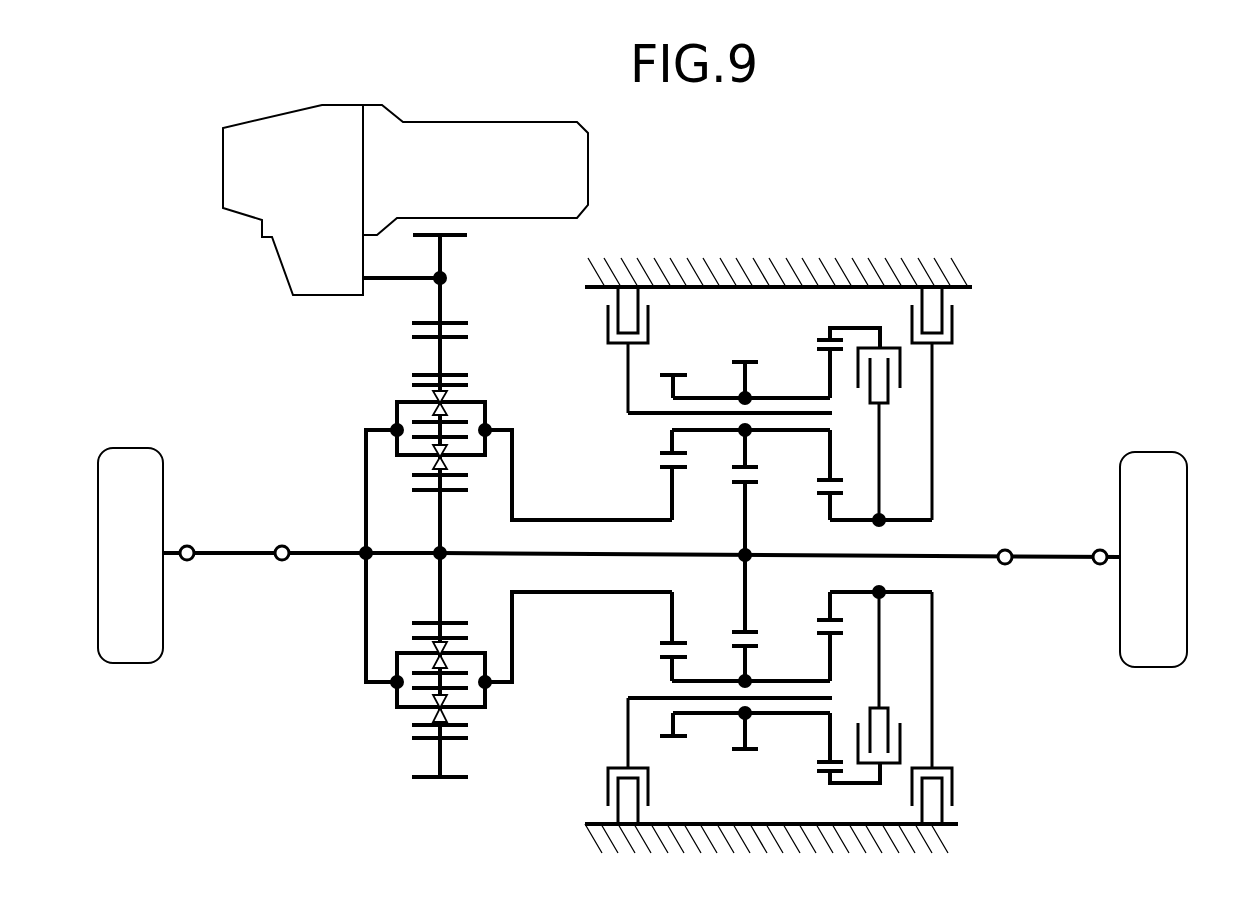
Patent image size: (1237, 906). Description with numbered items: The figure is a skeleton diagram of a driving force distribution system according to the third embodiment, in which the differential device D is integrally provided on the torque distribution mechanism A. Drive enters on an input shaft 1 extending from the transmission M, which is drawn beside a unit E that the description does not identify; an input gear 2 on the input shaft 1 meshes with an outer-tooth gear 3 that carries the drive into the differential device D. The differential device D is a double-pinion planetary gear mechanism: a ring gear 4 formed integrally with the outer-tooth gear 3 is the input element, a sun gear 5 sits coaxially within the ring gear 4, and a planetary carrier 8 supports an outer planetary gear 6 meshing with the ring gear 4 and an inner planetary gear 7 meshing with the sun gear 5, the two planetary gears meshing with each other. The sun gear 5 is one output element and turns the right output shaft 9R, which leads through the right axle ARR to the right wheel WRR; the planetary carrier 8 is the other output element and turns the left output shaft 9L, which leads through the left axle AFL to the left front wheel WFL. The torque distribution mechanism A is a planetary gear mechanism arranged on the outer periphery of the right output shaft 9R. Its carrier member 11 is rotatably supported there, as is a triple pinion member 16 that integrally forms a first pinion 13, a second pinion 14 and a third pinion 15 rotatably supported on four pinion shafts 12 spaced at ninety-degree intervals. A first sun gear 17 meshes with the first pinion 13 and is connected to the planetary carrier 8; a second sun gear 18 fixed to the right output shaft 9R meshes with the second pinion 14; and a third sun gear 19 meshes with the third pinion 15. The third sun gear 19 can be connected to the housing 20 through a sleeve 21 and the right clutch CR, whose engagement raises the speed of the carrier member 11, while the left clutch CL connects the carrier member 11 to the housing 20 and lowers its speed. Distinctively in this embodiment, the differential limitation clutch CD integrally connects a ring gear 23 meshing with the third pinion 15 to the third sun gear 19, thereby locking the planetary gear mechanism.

The input shaft 1 is at (422, 273).
The input gear 2 is at (463, 237).
The outer-tooth gear 3 is at (467, 342).
The ring gear 4 is at (467, 372).
The sun gear 5 is at (422, 495).
The outer planetary gear 6 is at (467, 385).
The inner planetary gear 7 is at (462, 473).
The planetary carrier 8 is at (366, 458).
The left output shaft 9L is at (327, 552).
The right output shaft 9R is at (937, 556).
The carrier member 11 is at (628, 380).
The pinion shafts 12 is at (652, 417).
The first pinion 13 is at (678, 370).
The second pinion 14 is at (747, 360).
The third pinion 15 is at (818, 352).
The triple pinion member 16 is at (707, 385).
The first sun gear 17 is at (662, 470).
The second sun gear 18 is at (733, 483).
The third sun gear 19 is at (822, 495).
The housing 20 is at (745, 272).
The sleeve 21 is at (907, 520).
The ring gear 23 is at (827, 340).
The transmission M is at (291, 180).
The engine E is at (484, 176).
The differential device D is at (370, 398).
The torque distribution mechanism A is at (887, 245).
The left clutch CL is at (597, 318).
The right clutch CR is at (962, 327).
The differential limitation clutch CD is at (899, 408).
The left front wheel WFL is at (133, 447).
The right rear wheel WRR is at (1155, 467).
The left front axle AFL is at (242, 550).
The right axle ARR is at (1047, 553).